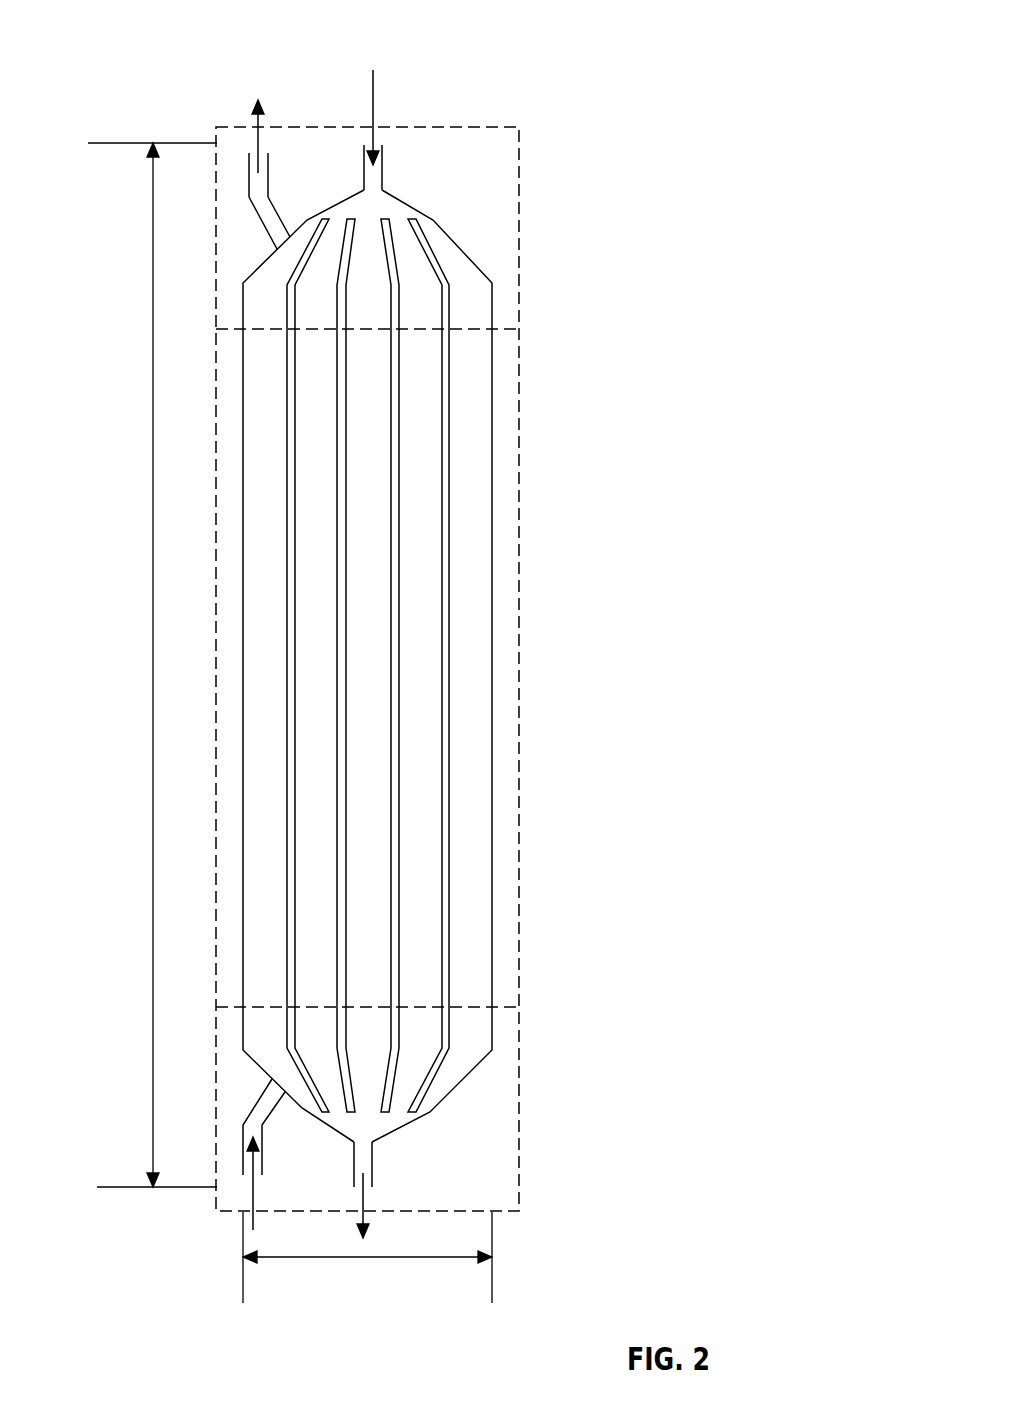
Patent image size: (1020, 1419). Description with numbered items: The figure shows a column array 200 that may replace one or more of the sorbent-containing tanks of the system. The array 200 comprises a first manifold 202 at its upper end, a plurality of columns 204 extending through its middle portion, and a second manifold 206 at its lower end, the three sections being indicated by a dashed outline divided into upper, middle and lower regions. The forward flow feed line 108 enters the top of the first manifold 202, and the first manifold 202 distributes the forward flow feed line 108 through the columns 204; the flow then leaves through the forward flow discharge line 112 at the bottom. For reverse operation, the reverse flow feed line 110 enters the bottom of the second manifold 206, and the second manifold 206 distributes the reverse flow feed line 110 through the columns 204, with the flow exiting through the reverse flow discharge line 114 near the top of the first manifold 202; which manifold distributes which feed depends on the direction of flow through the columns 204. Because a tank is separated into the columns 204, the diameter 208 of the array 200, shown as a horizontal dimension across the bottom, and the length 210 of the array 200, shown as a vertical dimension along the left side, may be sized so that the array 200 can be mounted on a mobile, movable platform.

The array 200 is at (492, 107).
The first manifold 202 is at (519, 208).
The columns 204 is at (519, 654).
The second manifold 206 is at (519, 1091).
The diameter 208 is at (307, 1258).
The length 210 is at (153, 322).
The forward flow feed line 108 is at (372, 92).
The forward flow discharge line 112 is at (365, 1202).
The reverse flow discharge line 114 is at (257, 137).
The reverse flow feed line 110 is at (252, 1192).